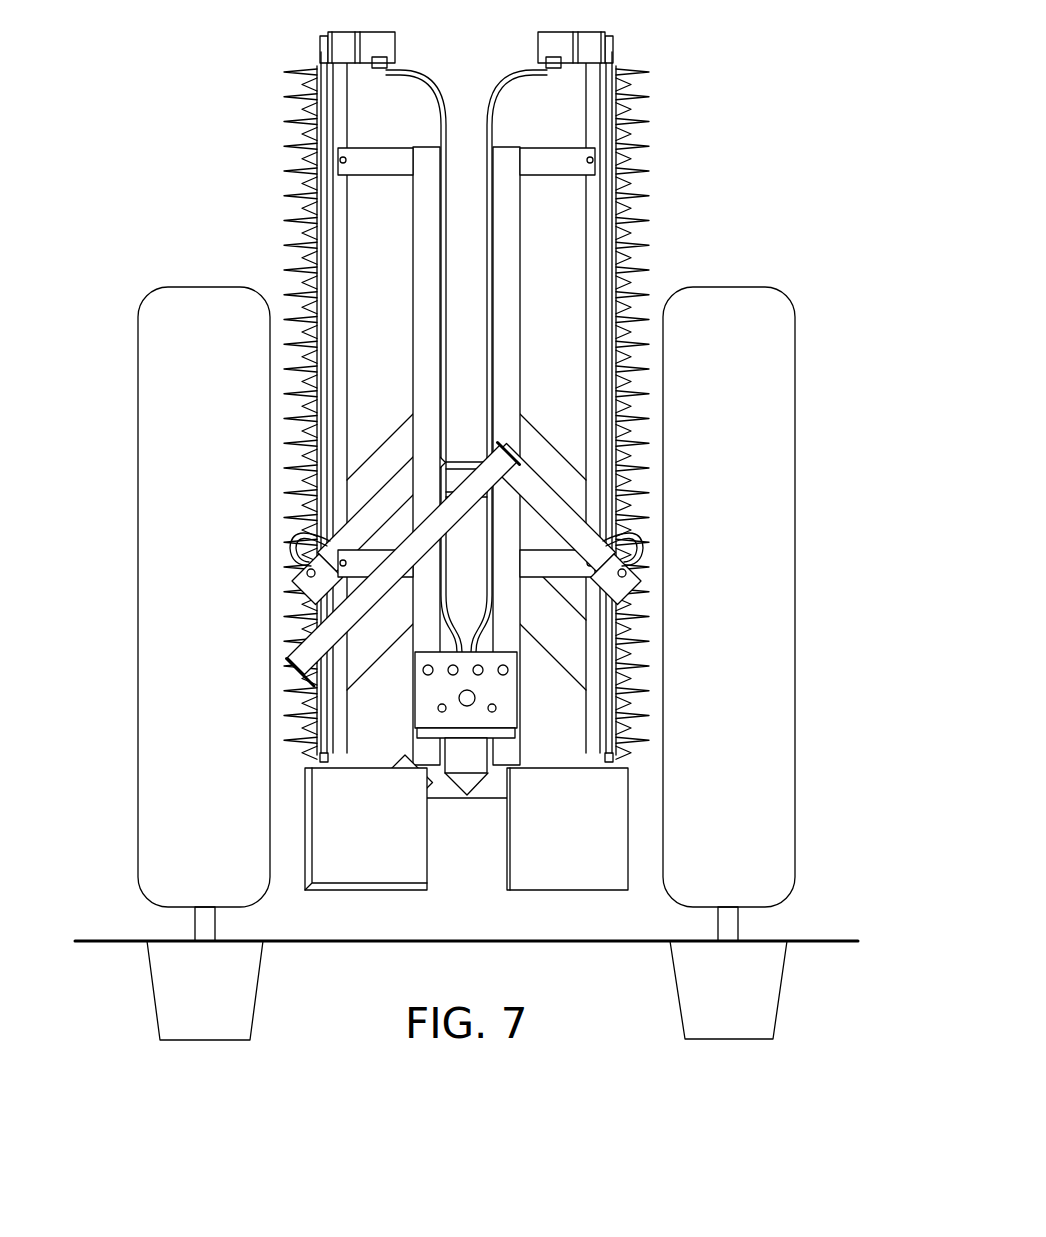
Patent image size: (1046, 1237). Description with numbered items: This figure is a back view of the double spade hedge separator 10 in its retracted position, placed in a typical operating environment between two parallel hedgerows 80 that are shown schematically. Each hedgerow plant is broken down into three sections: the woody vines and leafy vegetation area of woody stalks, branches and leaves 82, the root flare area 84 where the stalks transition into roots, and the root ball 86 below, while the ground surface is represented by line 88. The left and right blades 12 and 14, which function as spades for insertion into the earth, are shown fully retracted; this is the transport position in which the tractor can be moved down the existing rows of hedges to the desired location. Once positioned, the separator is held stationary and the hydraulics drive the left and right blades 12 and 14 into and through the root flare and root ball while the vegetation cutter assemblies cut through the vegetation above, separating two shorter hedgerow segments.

The double spade hedge separator 10 is at (507, 483).
The left blade 12 is at (402, 875).
The right blade 14 is at (523, 880).
The hedgerow 80 is at (197, 293).
The woody stalks, branches and leaves 82 is at (742, 608).
The root flare area 84 is at (730, 920).
The root ball 86 is at (760, 998).
The ground surface line 88 is at (610, 943).